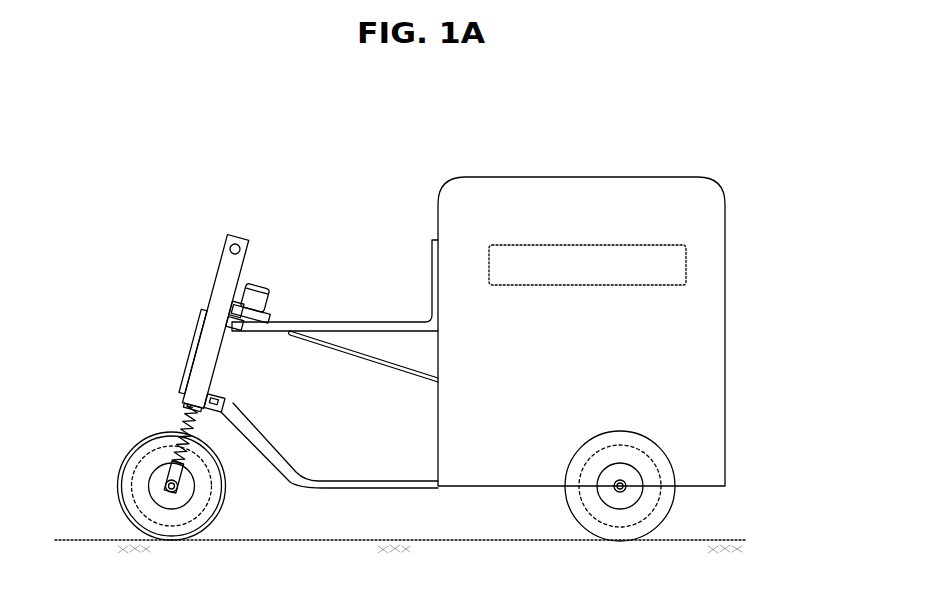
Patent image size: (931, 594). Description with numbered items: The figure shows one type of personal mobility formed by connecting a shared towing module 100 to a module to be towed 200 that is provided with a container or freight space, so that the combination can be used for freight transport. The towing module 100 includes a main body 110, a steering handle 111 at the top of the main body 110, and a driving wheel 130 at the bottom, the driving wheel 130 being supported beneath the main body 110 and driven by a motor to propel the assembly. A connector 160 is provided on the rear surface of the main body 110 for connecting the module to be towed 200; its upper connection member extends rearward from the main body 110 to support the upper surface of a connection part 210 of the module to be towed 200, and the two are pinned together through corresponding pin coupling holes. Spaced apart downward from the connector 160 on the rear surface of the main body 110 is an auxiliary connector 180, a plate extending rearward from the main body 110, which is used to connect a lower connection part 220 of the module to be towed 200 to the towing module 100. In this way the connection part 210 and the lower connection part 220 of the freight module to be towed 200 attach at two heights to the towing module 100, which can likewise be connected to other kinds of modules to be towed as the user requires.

The towing module 100 is at (222, 217).
The main body 110 is at (218, 295).
The steering handle 111 is at (236, 237).
The driving wheel 130 is at (125, 458).
The connector 160 is at (261, 276).
The auxiliary connector 180 is at (213, 407).
The module to be towed 200 is at (680, 170).
The connection part 210 is at (273, 322).
The lower connection part 220 is at (252, 420).